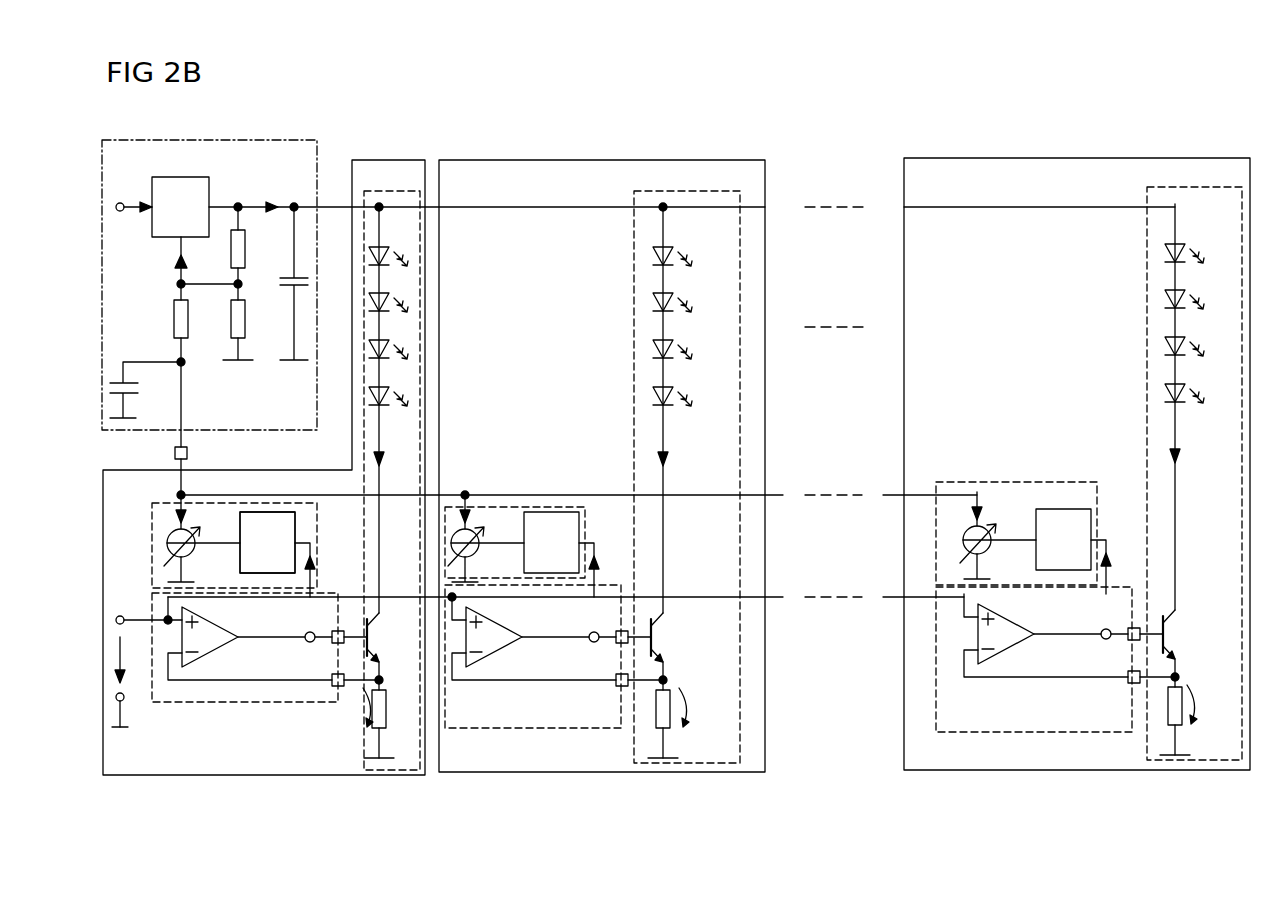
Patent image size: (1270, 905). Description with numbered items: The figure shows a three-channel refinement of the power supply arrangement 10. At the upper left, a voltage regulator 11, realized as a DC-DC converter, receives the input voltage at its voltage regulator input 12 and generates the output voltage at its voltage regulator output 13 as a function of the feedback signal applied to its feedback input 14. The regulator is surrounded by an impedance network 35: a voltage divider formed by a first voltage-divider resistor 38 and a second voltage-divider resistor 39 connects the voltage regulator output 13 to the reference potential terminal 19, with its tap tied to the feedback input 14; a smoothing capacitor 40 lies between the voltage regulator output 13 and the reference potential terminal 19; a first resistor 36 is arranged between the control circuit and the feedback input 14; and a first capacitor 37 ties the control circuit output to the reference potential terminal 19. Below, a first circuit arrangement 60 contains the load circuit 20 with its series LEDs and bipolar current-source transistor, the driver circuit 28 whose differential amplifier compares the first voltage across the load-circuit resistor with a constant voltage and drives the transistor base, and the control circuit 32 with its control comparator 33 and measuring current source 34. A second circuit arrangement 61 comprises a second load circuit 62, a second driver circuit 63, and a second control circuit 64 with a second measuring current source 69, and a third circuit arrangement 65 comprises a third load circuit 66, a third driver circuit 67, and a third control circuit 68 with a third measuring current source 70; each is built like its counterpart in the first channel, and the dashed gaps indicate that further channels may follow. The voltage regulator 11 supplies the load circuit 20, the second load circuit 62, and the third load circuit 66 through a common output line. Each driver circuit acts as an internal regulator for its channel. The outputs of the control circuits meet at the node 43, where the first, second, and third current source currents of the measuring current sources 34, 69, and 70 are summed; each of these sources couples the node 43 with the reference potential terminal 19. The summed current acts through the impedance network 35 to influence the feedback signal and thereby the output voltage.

The power supply arrangement 10 is at (825, 137).
The voltage regulator 11 is at (203, 177).
The voltage regulator input 12 is at (152, 205).
The voltage regulator output 13 is at (209, 207).
The feedback input 14 is at (180, 238).
The reference potential terminal 19 is at (122, 726).
The load circuit 20 is at (368, 196).
The driver circuit 28 is at (195, 702).
The control circuit 32 is at (318, 538).
The control comparator 33 is at (262, 512).
The measuring current source 34 is at (193, 553).
The impedance network 35 is at (245, 387).
The first resistor 36 is at (174, 305).
The first capacitor 37 is at (120, 372).
The first voltage-divider resistor 38 is at (246, 250).
The second voltage-divider resistor 39 is at (246, 318).
The smoothing capacitor 40 is at (298, 278).
The node 43 is at (185, 498).
The first circuit arrangement 60 is at (193, 777).
The second circuit arrangement 61 is at (545, 775).
The second load circuit 62 is at (643, 189).
The second driver circuit 63 is at (491, 728).
The second control circuit 64 is at (585, 523).
The third circuit arrangement 65 is at (1030, 772).
The third load circuit 66 is at (1159, 188).
The third driver circuit 67 is at (996, 732).
The third control circuit 68 is at (1023, 482).
The second measuring current source 69 is at (478, 548).
The third measuring current source 70 is at (989, 548).